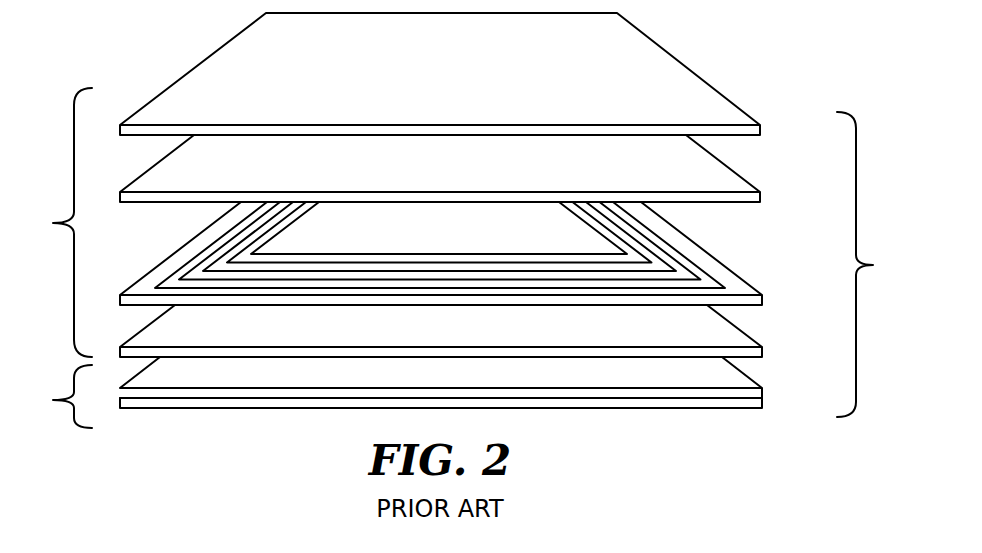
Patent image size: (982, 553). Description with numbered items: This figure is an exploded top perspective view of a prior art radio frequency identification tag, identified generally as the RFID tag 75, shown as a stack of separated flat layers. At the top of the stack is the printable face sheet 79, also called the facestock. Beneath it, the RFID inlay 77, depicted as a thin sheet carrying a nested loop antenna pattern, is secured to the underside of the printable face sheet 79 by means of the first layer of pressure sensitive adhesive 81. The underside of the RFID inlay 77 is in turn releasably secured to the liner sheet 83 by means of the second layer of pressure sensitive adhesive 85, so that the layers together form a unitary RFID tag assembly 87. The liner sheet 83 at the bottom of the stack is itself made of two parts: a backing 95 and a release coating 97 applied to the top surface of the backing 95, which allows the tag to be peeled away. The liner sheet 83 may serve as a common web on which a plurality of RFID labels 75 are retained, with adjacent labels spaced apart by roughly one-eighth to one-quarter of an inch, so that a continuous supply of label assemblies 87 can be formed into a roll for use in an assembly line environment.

The RFID tag 75 is at (45, 238).
The RFID inlay 77 is at (118, 295).
The printable face sheet 79 is at (690, 88).
The first layer of pressure sensitive adhesive 81 is at (760, 194).
The liner sheet 83 is at (51, 413).
The second layer of pressure sensitive adhesive 85 is at (762, 348).
The RFID tag assembly 87 is at (908, 279).
The backing 95 is at (757, 408).
The release coating 97 is at (762, 392).